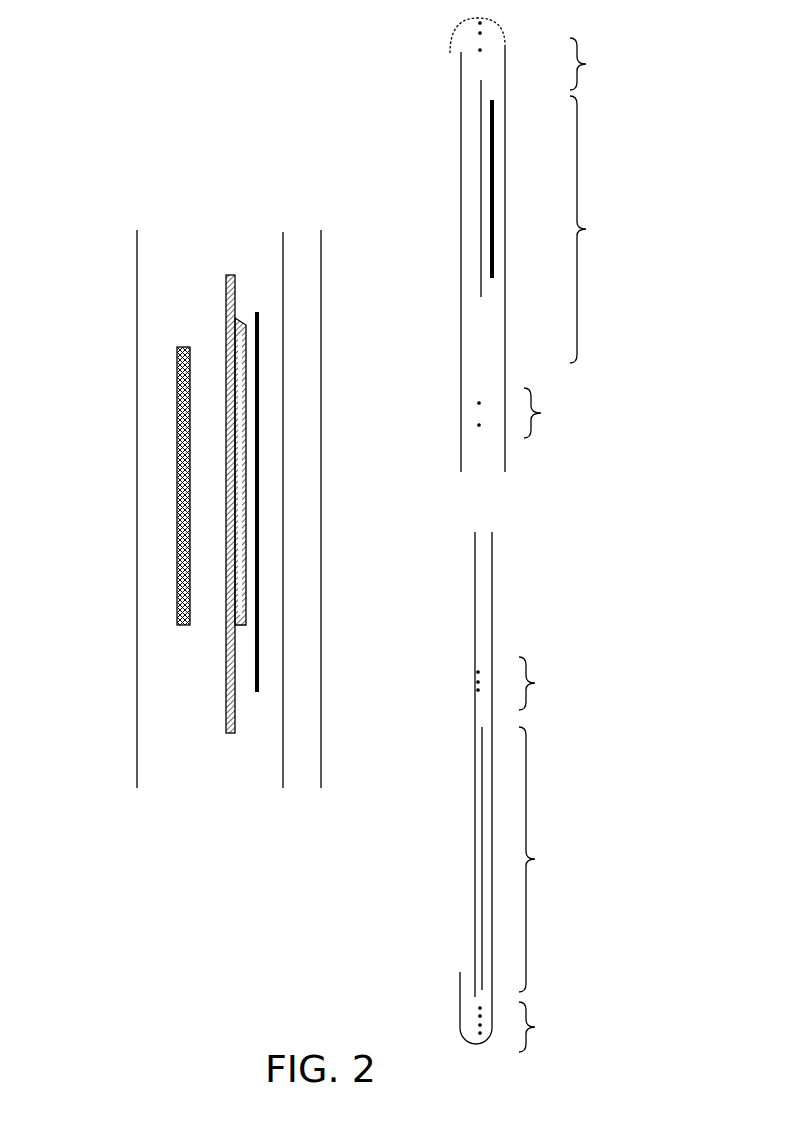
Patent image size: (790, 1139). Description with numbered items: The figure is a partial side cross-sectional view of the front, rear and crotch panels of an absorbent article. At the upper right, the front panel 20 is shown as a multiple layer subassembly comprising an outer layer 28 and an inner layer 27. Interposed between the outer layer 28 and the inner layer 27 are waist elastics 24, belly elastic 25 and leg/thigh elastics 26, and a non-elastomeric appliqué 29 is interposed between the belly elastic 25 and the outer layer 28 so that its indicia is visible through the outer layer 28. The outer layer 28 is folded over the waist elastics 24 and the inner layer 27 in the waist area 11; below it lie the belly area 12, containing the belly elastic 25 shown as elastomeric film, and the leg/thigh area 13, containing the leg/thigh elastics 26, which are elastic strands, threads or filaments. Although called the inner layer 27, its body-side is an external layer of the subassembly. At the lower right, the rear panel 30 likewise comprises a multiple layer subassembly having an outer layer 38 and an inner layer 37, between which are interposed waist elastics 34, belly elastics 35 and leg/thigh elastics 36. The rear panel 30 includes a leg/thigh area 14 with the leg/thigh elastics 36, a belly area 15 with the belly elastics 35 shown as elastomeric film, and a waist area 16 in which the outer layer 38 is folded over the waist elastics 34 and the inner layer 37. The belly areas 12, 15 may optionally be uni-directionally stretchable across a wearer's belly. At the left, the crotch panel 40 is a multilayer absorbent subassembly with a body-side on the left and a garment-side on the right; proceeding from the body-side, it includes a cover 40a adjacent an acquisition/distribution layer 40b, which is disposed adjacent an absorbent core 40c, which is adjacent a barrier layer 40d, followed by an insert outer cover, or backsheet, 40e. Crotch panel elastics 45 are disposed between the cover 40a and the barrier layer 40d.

The waist area 11 is at (595, 64).
The belly area 12 is at (593, 229).
The leg/thigh area 13 is at (548, 413).
The leg/thigh area 14 is at (541, 683).
The belly area 15 is at (544, 859).
The waist area 16 is at (544, 1027).
The front panel 20 is at (619, 80).
The waist elastics 24 is at (477, 40).
The belly elastic 25 is at (480, 143).
The leg/thigh elastics 26 is at (478, 413).
The inner layer 27 is at (459, 243).
The outer layer 28 is at (505, 452).
The non-elastomeric appliqué 29 is at (492, 170).
The rear panel 30 is at (613, 621).
The waist elastics 34 is at (478, 1022).
The belly elastics 35 is at (481, 836).
The leg/thigh elastics 36 is at (477, 682).
The inner layer 37 is at (475, 570).
The outer layer 38 is at (497, 572).
The crotch panel 40 is at (98, 401).
The cover 40a is at (137, 250).
The acquisition/distribution layer 40b is at (183, 347).
The absorbent core 40c is at (231, 275).
The barrier layer 40d is at (283, 240).
The insert outer cover 40e is at (321, 240).
The crotch panel elastics 45 is at (256, 692).